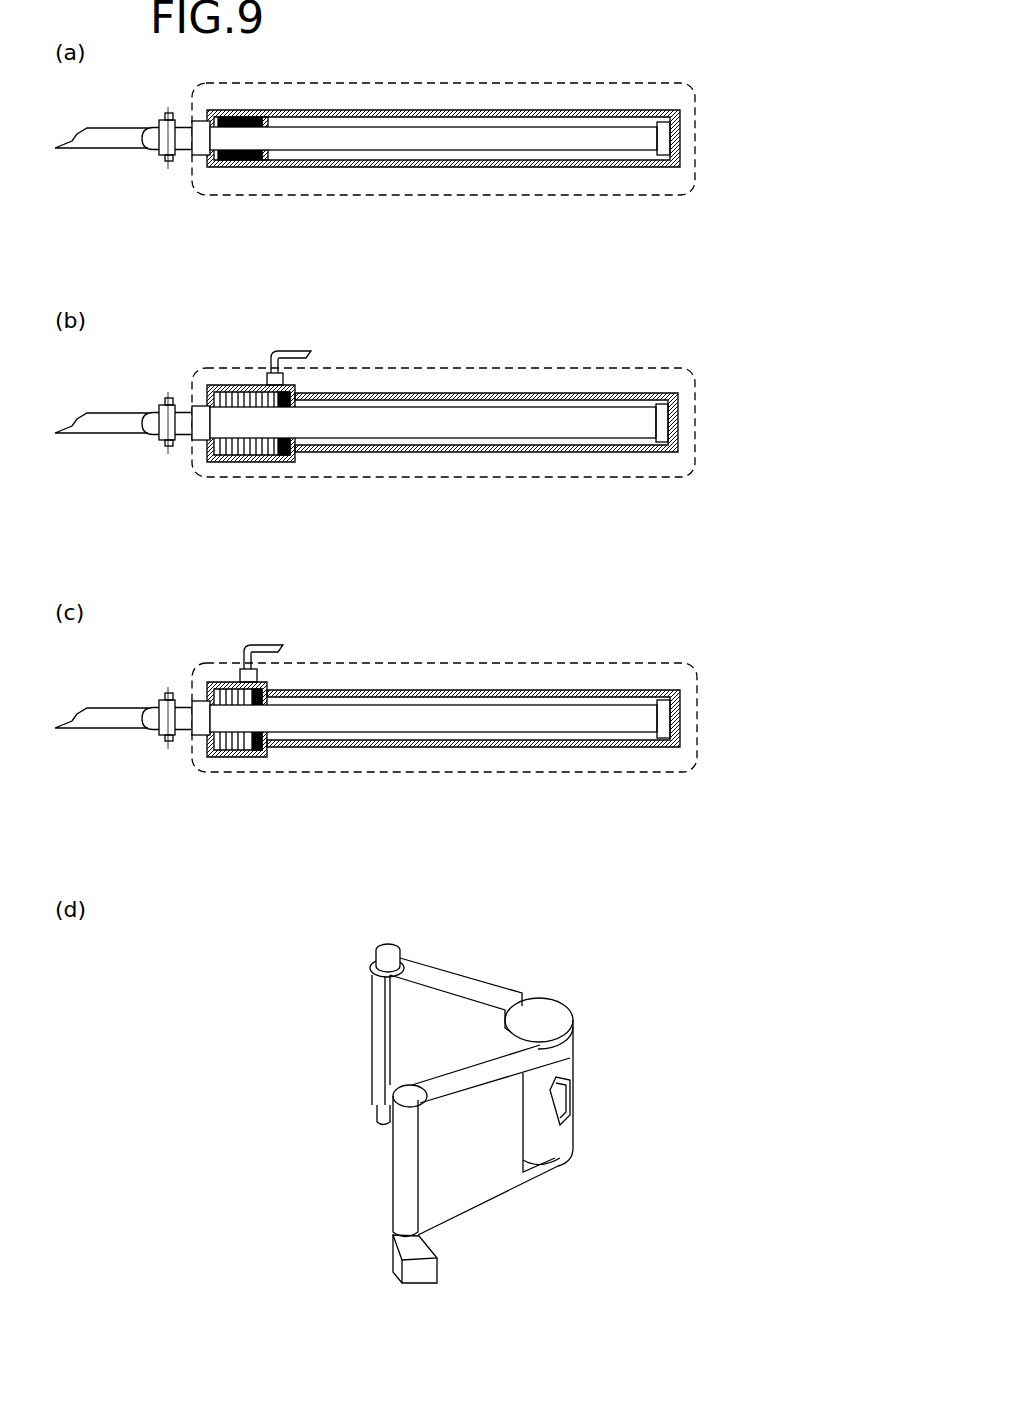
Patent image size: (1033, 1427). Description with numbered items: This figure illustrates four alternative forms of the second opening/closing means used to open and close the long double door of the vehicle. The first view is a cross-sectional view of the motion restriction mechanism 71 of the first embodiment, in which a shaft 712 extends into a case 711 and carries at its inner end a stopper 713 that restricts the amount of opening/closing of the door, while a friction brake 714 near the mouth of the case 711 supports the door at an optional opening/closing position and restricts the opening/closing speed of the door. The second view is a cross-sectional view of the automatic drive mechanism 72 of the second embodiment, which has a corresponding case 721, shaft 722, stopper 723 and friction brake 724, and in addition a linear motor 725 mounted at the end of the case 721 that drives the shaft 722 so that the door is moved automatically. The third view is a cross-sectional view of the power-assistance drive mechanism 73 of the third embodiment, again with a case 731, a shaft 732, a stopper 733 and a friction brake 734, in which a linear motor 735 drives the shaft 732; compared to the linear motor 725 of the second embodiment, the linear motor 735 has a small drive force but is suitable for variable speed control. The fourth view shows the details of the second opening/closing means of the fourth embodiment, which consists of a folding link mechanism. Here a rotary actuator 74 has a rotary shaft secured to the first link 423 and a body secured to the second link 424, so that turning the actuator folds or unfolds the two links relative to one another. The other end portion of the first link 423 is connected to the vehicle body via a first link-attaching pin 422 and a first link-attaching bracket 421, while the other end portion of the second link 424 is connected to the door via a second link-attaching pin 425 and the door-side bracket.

The motion restriction mechanism 71 is at (502, 182).
The case 711 is at (398, 163).
The shaft 712 is at (497, 138).
The stopper 713 is at (663, 140).
The friction brake 714 is at (250, 165).
The automatic drive mechanism 72 is at (495, 458).
The case 721 is at (408, 448).
The shaft 722 is at (490, 423).
The stopper 723 is at (662, 425).
The friction brake 724 is at (288, 462).
The linear motor 725 is at (235, 442).
The power-assistance drive mechanism 73 is at (494, 755).
The case 731 is at (408, 743).
The shaft 732 is at (517, 718).
The stopper 733 is at (662, 718).
The friction brake 734 is at (262, 757).
The linear motor 735 is at (227, 735).
The rotary actuator 74 is at (562, 1097).
The first link-attaching bracket 421 is at (420, 1268).
The first link-attaching pin 422 is at (405, 1162).
The first link 423 is at (468, 1192).
The second link 424 is at (428, 1028).
The second link-attaching pin 425 is at (383, 963).